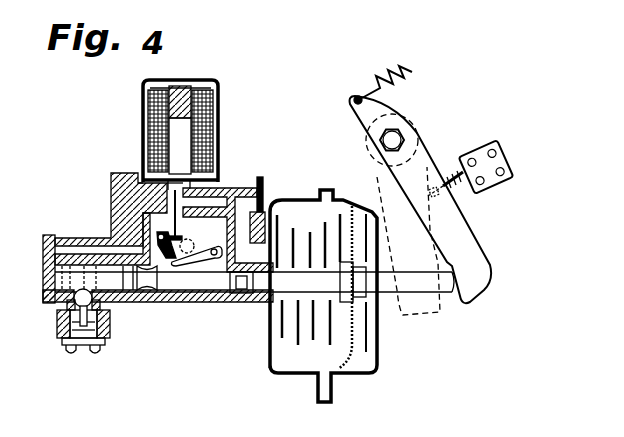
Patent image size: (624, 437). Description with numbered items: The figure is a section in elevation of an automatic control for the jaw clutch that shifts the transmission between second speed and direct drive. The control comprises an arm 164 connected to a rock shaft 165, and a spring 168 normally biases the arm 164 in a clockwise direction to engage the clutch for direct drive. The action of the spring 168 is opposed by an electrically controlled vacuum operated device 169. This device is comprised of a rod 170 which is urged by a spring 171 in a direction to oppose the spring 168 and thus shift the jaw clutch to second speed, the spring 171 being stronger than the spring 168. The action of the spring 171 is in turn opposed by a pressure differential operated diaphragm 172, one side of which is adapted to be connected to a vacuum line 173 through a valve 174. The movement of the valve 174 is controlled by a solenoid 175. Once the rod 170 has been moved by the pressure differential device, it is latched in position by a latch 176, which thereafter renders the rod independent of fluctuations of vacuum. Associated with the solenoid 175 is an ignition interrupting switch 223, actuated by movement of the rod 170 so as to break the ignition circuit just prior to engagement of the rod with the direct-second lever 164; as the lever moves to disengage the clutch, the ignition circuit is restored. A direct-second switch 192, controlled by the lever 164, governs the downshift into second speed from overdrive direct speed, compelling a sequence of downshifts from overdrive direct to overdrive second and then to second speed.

The arm 164 is at (467, 224).
The rock shaft 165 is at (385, 140).
The spring 168 is at (405, 68).
The electrically controlled vacuum operated device 169 is at (307, 192).
The rod 170 is at (260, 293).
The spring 171 is at (308, 239).
The pressure differential operated diaphragm 172 is at (333, 363).
The vacuum line 173 is at (192, 255).
The valve 174 is at (199, 221).
The solenoid 175 is at (143, 120).
The latch 176 is at (205, 262).
The direct-second switch 192 is at (477, 150).
The ignition interrupting switch 223 is at (57, 318).